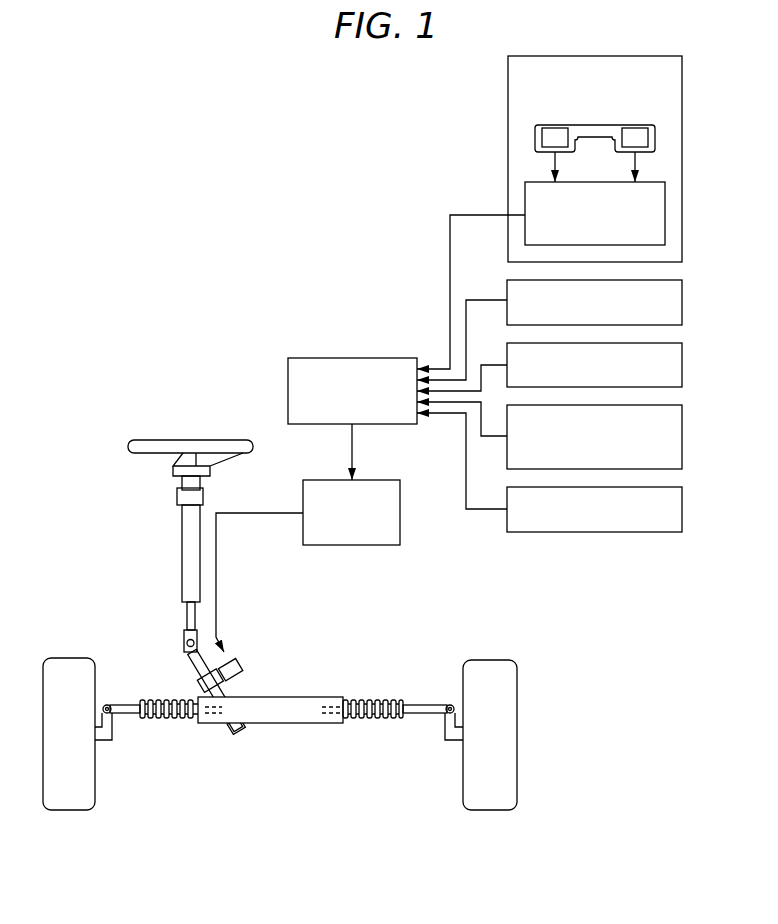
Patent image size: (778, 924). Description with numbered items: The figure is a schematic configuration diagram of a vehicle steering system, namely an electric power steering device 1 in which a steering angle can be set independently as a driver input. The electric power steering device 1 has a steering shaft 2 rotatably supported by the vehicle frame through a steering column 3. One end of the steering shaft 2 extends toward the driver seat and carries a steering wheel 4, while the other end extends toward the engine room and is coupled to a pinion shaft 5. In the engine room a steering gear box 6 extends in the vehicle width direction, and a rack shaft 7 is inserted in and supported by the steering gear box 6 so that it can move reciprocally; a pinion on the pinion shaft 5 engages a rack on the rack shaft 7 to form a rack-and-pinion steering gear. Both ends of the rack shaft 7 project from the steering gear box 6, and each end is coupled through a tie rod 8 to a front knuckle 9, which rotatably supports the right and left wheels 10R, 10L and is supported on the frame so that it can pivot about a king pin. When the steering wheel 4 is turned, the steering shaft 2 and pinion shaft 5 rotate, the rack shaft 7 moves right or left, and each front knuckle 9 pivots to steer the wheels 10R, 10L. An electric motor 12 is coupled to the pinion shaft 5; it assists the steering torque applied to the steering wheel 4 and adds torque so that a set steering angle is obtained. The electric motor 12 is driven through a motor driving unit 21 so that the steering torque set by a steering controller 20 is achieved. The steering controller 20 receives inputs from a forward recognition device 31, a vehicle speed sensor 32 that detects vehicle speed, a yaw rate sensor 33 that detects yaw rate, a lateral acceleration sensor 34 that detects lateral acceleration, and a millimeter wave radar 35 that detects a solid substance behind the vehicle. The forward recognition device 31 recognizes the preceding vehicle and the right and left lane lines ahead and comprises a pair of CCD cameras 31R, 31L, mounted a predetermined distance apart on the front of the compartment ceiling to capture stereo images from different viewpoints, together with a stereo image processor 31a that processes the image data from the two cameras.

The electric power steering device 1 is at (132, 506).
The steering shaft 2 is at (187, 617).
The steering column 3 is at (188, 548).
The steering wheel 4 is at (193, 445).
The pinion shaft 5 is at (202, 672).
The steering gear box 6 is at (272, 723).
The rack shaft 7 is at (329, 697).
The tie rod 8 is at (127, 713).
The front knuckle 9 is at (100, 740).
The right wheel 10R is at (70, 806).
The left wheel 10L is at (490, 806).
The electric motor 12 is at (240, 662).
The steering controller 20 is at (376, 358).
The motor driving unit 21 is at (376, 480).
The forward recognition device 31 is at (616, 56).
The CCD camera 31R is at (542, 135).
The CCD camera 31L is at (648, 135).
The stereo image processor 31a is at (665, 215).
The vehicle speed sensor 32 is at (682, 303).
The yaw rate sensor 33 is at (682, 365).
The lateral acceleration sensor 34 is at (682, 427).
The millimeter wave radar 35 is at (682, 509).